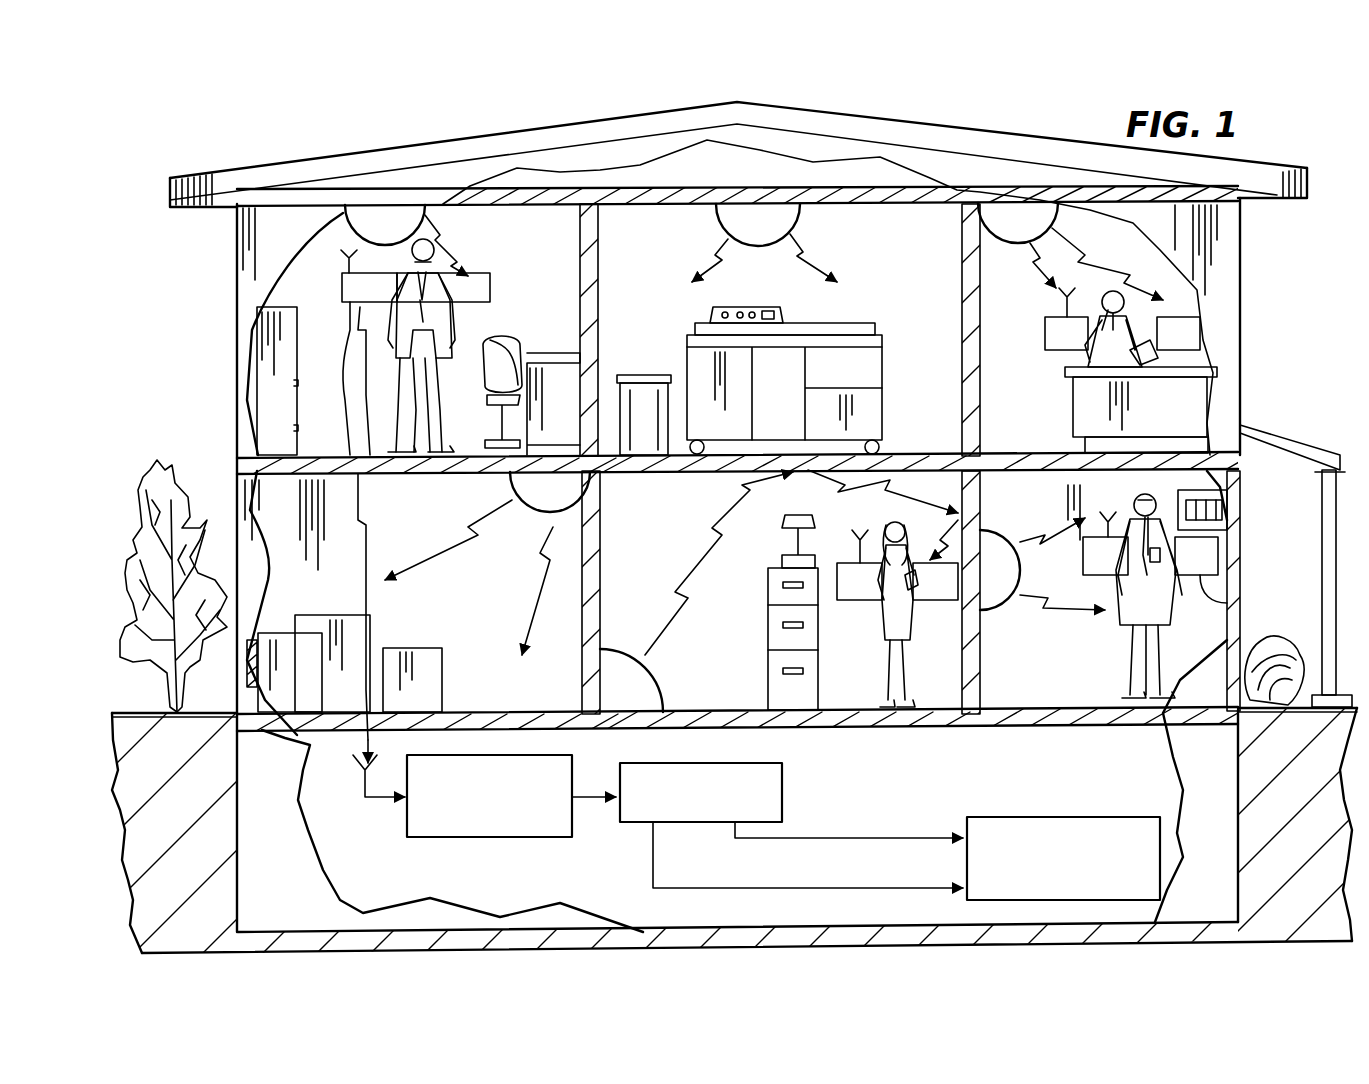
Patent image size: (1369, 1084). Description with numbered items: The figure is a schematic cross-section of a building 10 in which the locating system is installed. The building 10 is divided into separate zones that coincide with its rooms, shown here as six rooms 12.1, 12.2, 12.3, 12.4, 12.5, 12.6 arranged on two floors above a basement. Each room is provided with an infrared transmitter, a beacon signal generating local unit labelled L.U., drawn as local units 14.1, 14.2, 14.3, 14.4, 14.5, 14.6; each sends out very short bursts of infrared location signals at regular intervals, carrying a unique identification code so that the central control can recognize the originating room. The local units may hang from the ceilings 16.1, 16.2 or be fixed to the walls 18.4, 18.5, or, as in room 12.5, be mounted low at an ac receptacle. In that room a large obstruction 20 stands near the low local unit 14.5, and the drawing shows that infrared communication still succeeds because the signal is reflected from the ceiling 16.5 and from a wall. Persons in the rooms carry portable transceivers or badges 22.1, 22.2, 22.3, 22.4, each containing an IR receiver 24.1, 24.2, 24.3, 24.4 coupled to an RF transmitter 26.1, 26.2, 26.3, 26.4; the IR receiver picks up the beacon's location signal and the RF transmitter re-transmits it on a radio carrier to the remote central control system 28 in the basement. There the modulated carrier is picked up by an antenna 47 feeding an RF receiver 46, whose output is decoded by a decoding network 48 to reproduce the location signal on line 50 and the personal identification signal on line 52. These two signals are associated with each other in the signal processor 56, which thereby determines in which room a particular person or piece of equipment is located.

The building 10 is at (318, 150).
The zone 12.1 is at (548, 252).
The zone 12.2 is at (915, 251).
The zone 12.3 is at (1050, 434).
The zone 12.4 is at (497, 630).
The zone 12.5 is at (774, 605).
The zone 12.6 is at (1082, 664).
The infrared transmitter 14.1 is at (343, 218).
The infrared transmitter 14.2 is at (718, 218).
The infrared transmitter 14.3 is at (1040, 210).
The infrared transmitter 14.4 is at (513, 488).
The infrared transmitter 14.5 is at (664, 676).
The infrared transmitter 14.6 is at (1000, 535).
The ceiling 16.1 is at (447, 212).
The ceiling 16.2 is at (828, 212).
The ceiling 16.5 is at (720, 472).
The wall 18.4 is at (580, 615).
The wall 18.5 is at (962, 700).
The obstruction 20 is at (768, 635).
The portable transceiver 22.1 is at (322, 292).
The portable transceiver 22.2 is at (1032, 333).
The portable transceiver 22.3 is at (858, 605).
The portable transceiver 22.4 is at (1230, 580).
The IR receiver 24.1 is at (492, 286).
The IR receiver 24.2 is at (1200, 337).
The IR receiver 24.3 is at (950, 600).
The IR receiver 24.4 is at (1227, 603).
The RF transmitter 26.1 is at (344, 405).
The RF transmitter 26.2 is at (1043, 350).
The RF transmitter 26.3 is at (838, 560).
The RF transmitter 26.4 is at (1080, 543).
The central control system 28 is at (746, 832).
The RF receiver 46 is at (475, 840).
The antenna 47 is at (360, 780).
The decoding network 48 is at (697, 824).
The line 50 is at (762, 890).
The line 52 is at (855, 838).
The signal processor 56 is at (1122, 817).